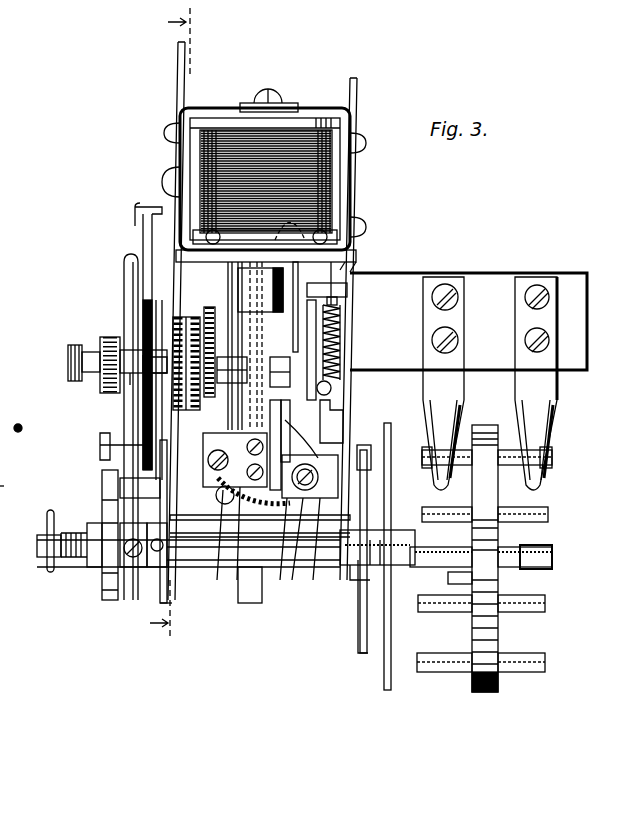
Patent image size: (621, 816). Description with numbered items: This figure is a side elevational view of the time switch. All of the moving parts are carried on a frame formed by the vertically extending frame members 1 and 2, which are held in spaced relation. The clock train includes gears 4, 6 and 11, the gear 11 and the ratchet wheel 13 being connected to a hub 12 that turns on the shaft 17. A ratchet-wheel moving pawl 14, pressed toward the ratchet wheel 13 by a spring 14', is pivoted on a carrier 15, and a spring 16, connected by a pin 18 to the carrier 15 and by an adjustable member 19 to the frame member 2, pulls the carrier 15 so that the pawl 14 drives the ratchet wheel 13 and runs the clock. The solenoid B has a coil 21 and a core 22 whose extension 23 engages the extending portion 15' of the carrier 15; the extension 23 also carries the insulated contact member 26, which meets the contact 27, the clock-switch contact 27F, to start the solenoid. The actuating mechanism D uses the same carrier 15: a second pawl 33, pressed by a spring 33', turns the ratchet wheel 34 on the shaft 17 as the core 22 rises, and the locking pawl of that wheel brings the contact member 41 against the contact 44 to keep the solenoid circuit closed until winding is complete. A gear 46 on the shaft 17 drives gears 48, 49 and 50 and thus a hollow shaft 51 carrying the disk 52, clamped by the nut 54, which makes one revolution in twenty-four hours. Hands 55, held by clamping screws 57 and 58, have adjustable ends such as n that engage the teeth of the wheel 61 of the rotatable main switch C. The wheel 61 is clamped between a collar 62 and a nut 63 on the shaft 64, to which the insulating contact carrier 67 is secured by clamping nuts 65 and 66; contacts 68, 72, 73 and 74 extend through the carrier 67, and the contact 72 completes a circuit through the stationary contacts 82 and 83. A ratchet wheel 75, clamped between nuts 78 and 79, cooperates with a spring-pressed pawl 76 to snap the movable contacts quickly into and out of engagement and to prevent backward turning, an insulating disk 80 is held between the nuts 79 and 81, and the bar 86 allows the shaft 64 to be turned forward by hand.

The vertically extending frame member 1 is at (170, 290).
The vertically extending frame member 2 is at (0, 292).
The gear 4 is at (172, 326).
The gear 6 is at (352, 430).
The gear 11 is at (210, 306).
The hub 12 is at (232, 357).
The ratchet wheel 13 is at (250, 405).
The ratchet-wheel moving pawl 14 is at (239, 346).
The spring 14' is at (245, 283).
The carrier 15 is at (368, 329).
The extending portion of carrier 15' is at (355, 342).
The spring 16 is at (342, 355).
The shaft 17 is at (332, 388).
The pin 18 is at (468, 307).
The adjustable member 19 is at (343, 412).
The coil 21 is at (335, 141).
The core 22 is at (242, 603).
The extension 23 is at (303, 505).
The contact member 26 is at (204, 444).
The contact 27 is at (218, 560).
The bar 27F is at (20, 483).
The second ratchet-wheel moving pawl 33 is at (367, 342).
The spring 33' is at (387, 235).
The ratchet wheel 34 is at (343, 316).
The contact member 41 is at (0, 441).
The contact 44 is at (0, 466).
The gear 46 is at (125, 341).
The gear 48 is at (0, 262).
The gear 49 is at (0, 309).
The gear 50 is at (165, 336).
The hollow shaft 51 is at (100, 390).
The disk 52 is at (143, 236).
The clamping nut 54 is at (135, 381).
The hand 55 is at (53, 341).
The clamping screw 57 is at (70, 374).
The clamping screw 58 is at (100, 466).
The wheel 61 is at (112, 603).
The collar 62 is at (135, 600).
The nut 63 is at (88, 568).
The shaft 64 is at (540, 544).
The clamping nut 65 is at (460, 580).
The clamping nut 66 is at (540, 576).
The contact carrier 67 is at (478, 694).
The contact 68 is at (420, 673).
The contact 72 is at (552, 458).
The contact 73 is at (422, 507).
The contact 74 is at (420, 598).
The ratchet wheel 75 is at (372, 656).
The pawl 76 is at (372, 455).
The nut 78 is at (358, 576).
The nut 79 is at (360, 616).
The disk of insulating material 80 is at (386, 690).
The nut 81 is at (405, 578).
The stationary contact 82 is at (535, 432).
The stationary contact 83 is at (452, 424).
The bar 86 is at (46, 516).
The solenoid B is at (330, 174).
The rotatable main switch C is at (545, 496).
The actuating mechanism D is at (104, 535).
The end of hand n is at (122, 258).